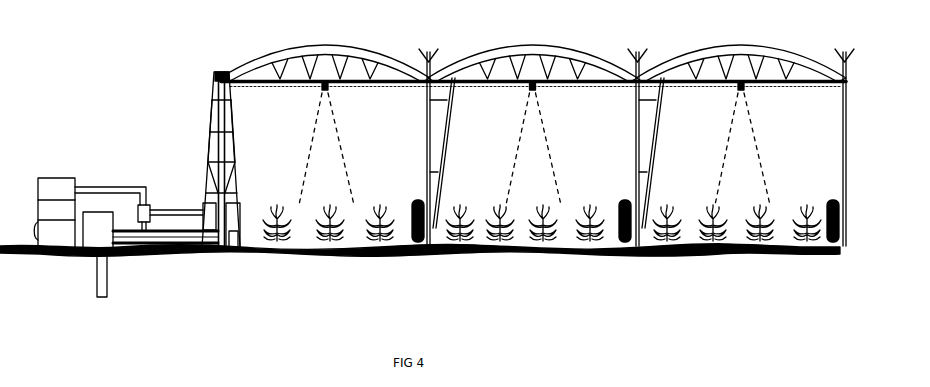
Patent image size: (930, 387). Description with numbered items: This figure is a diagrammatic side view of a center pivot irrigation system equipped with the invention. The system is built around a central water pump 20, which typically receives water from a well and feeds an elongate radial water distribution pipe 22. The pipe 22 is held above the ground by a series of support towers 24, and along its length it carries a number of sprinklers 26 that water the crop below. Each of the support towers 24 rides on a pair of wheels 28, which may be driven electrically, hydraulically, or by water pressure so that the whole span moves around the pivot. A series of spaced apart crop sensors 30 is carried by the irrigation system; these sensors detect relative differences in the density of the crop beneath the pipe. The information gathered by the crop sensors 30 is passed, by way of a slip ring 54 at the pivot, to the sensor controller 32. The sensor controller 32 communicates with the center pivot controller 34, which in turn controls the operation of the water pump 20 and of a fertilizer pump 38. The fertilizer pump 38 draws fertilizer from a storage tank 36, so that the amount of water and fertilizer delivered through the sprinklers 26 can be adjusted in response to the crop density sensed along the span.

The central water pump 20 is at (98, 236).
The elongate radial water distribution pipe 22 is at (535, 47).
The support towers 24 is at (427, 142).
The sprinklers 26 is at (436, 52).
The wheels 28 is at (414, 246).
The crop sensors 30 is at (320, 89).
The sensor controller 32 is at (241, 208).
The center pivot controller 34 is at (206, 210).
The storage tank 36 is at (58, 179).
The fertilizer pump 38 is at (142, 205).
The slip ring 54 is at (214, 73).